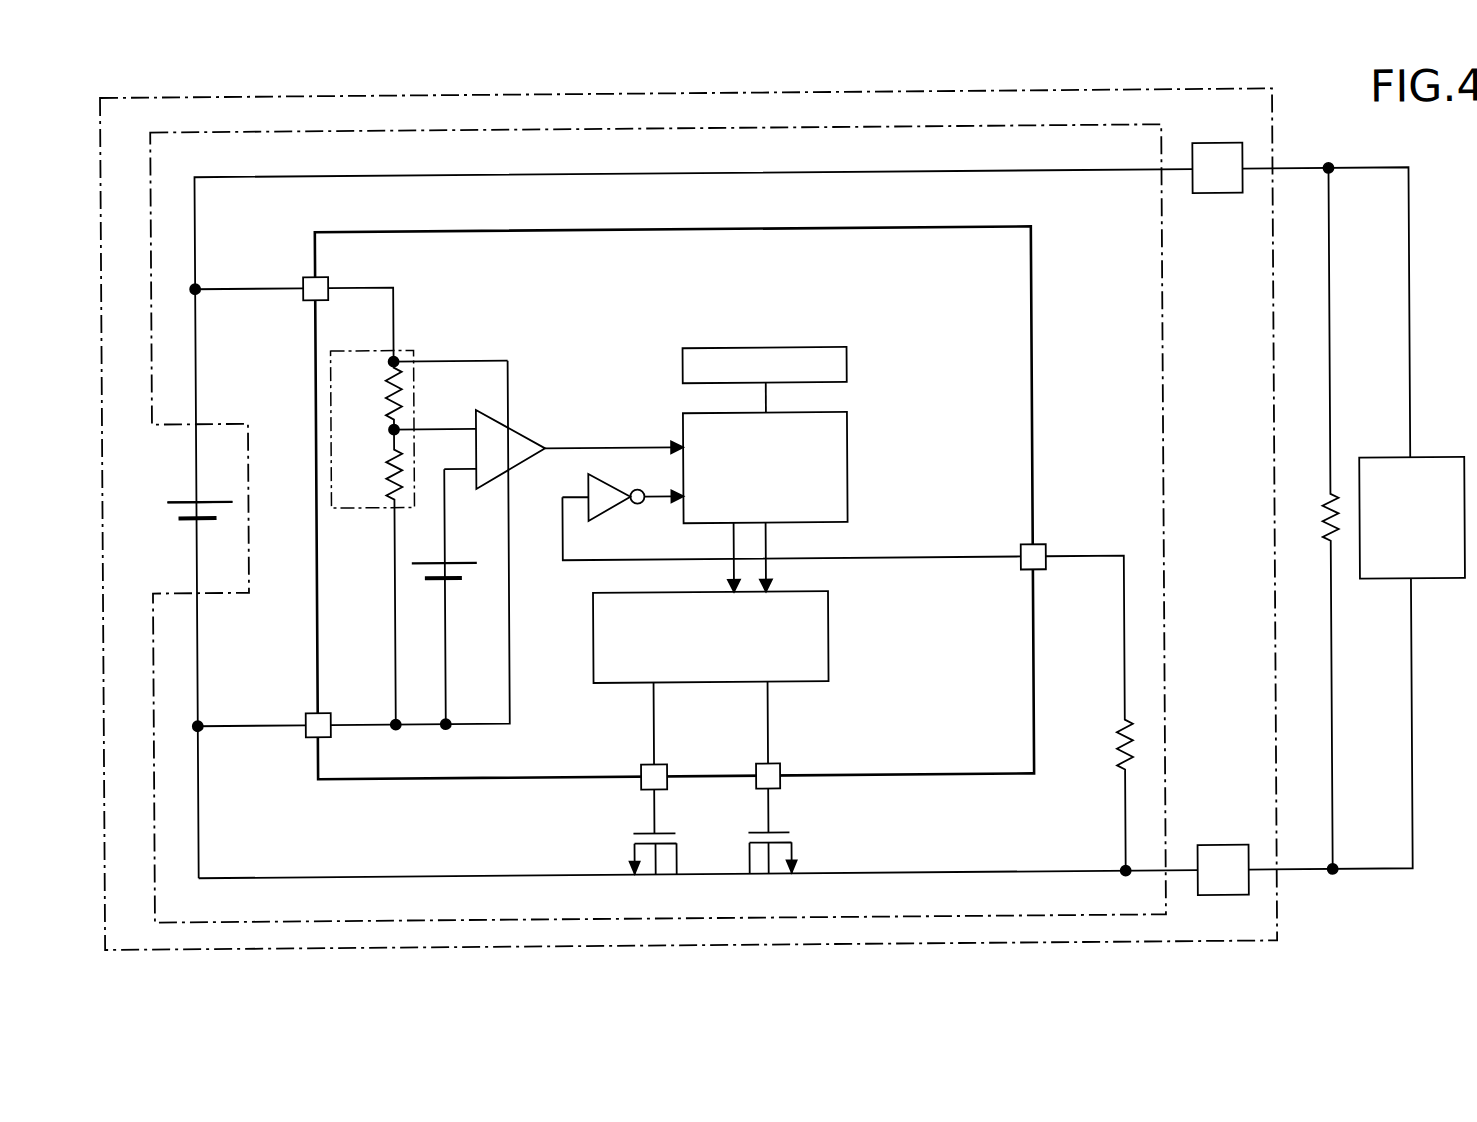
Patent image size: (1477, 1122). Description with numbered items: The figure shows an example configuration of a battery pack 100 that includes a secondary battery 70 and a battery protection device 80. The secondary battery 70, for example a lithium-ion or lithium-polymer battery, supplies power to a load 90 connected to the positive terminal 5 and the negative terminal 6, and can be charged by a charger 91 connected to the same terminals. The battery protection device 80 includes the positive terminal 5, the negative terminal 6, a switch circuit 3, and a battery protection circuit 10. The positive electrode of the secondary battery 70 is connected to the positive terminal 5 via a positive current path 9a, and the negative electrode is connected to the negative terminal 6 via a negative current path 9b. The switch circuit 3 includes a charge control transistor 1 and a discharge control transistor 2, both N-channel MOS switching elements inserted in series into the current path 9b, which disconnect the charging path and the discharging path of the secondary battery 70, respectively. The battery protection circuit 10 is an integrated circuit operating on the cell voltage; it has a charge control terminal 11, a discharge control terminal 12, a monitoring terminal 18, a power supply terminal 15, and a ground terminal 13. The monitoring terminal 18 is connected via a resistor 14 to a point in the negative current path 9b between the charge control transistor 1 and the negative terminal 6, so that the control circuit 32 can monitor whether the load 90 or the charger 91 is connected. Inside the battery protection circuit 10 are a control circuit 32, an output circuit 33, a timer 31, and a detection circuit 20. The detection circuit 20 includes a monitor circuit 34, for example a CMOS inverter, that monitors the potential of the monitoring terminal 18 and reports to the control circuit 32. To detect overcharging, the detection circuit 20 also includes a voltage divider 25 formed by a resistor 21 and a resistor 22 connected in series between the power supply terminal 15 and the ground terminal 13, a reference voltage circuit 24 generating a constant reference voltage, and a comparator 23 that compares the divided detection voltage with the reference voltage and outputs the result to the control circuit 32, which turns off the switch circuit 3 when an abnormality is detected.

The battery pack 100 is at (1210, 98).
The battery protection device 80 is at (1104, 133).
The battery protection circuit 10 is at (985, 234).
The positive current path 9a is at (703, 178).
The negative current path 9b is at (435, 879).
The positive terminal 5 is at (1216, 202).
The negative terminal 6 is at (1218, 854).
The load 90 is at (1318, 518).
The charger 91 is at (1419, 468).
The resistor 14 is at (1110, 753).
The secondary battery 70 is at (164, 501).
The power supply terminal 15 is at (297, 304).
The ground terminal 13 is at (301, 715).
The detection circuit 20 is at (527, 362).
The voltage divider 25 is at (372, 510).
The resistor 21 is at (384, 382).
The resistor 22 is at (384, 458).
The comparator 23 is at (528, 438).
The reference voltage circuit 24 is at (459, 584).
The timer 31 is at (803, 354).
The control circuit 32 is at (803, 418).
The monitor circuit 34 is at (606, 490).
The output circuit 33 is at (784, 598).
The monitoring terminal 18 is at (1044, 552).
The discharge control terminal 12 is at (658, 769).
The charge control terminal 11 is at (752, 769).
The switch circuit 3 is at (712, 844).
The discharge control transistor 2 is at (670, 864).
The charge control transistor 1 is at (746, 864).